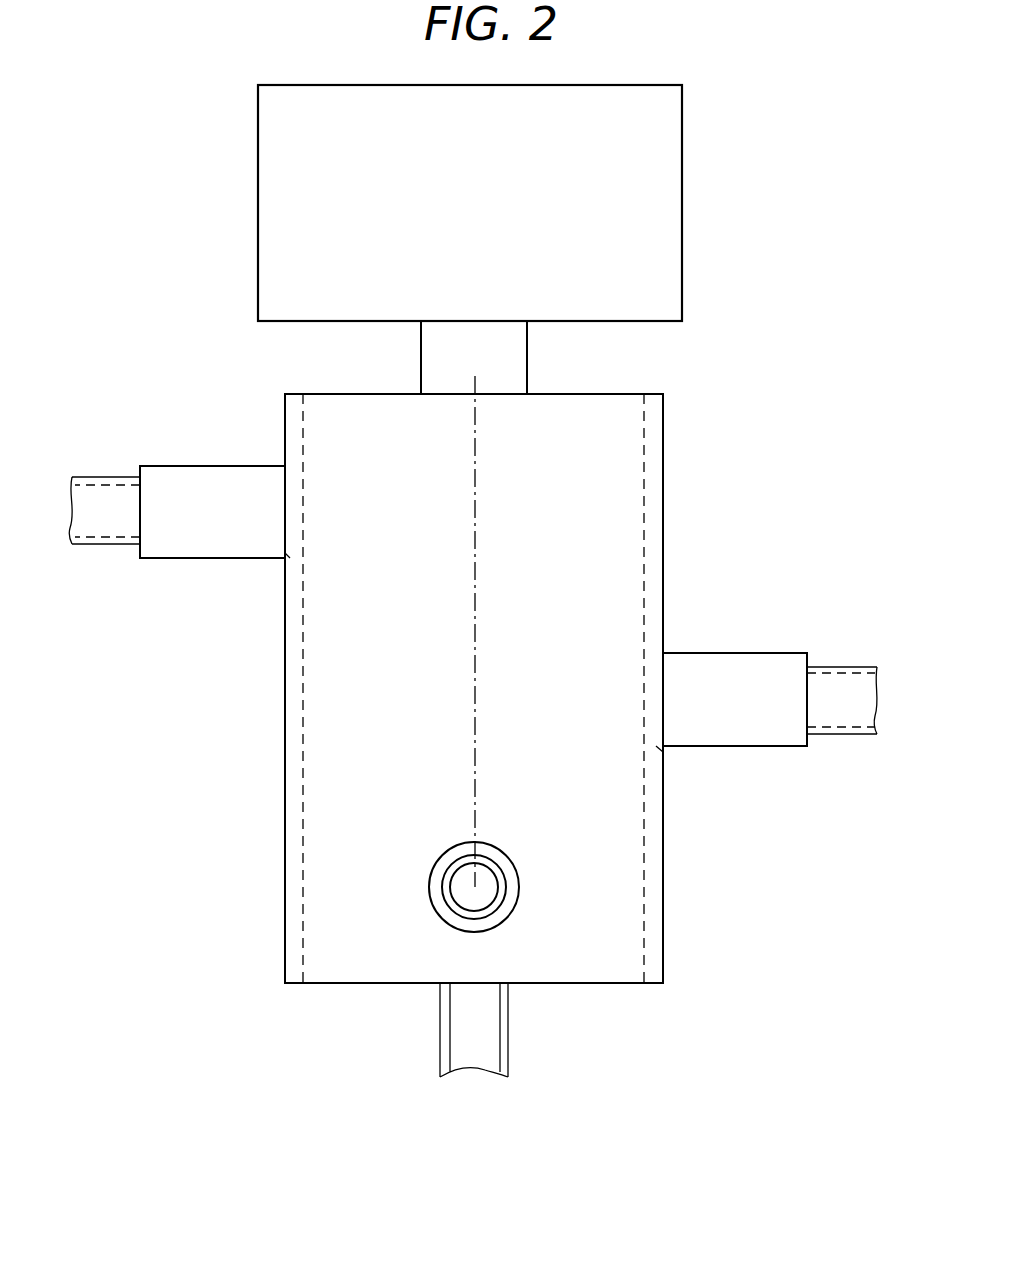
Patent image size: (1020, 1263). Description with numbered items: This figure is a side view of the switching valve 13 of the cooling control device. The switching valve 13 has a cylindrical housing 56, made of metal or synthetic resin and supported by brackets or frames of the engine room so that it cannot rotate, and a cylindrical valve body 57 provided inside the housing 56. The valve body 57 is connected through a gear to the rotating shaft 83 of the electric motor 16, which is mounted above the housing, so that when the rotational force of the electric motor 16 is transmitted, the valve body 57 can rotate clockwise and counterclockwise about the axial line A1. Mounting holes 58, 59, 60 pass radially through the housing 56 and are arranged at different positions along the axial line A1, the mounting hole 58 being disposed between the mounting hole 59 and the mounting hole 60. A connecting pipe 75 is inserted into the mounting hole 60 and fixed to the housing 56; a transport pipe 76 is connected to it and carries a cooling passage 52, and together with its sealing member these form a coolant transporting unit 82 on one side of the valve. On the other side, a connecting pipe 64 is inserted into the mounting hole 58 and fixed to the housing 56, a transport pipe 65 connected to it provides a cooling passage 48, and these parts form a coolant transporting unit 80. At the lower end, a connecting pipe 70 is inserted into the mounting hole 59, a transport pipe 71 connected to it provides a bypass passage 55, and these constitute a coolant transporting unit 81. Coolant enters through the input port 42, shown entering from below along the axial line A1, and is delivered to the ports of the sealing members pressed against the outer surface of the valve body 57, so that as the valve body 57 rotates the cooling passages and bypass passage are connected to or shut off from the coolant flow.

The electric motor 16 is at (270, 222).
The rotating shaft 83 is at (433, 360).
The switching valve 13 is at (277, 420).
The valve body 57 is at (300, 743).
The housing 56 is at (343, 809).
The axial line A1 is at (475, 485).
The connecting pipe 75 is at (193, 480).
The cooling passage 52 is at (104, 493).
The transport pipe 76 is at (92, 545).
The coolant transporting unit 82 is at (157, 570).
The mounting hole 60 is at (282, 553).
The connecting pipe 64 is at (733, 667).
The cooling passage 48 is at (841, 688).
The transport pipe 65 is at (850, 734).
The coolant transporting unit 80 is at (769, 763).
The mounting hole 58 is at (666, 748).
The connecting pipe 70 is at (430, 886).
The mounting hole 59 is at (517, 907).
The transport pipe 71 is at (497, 909).
The bypass passage 55 is at (467, 894).
The coolant transporting unit 81 is at (540, 892).
The input port 42 is at (476, 983).